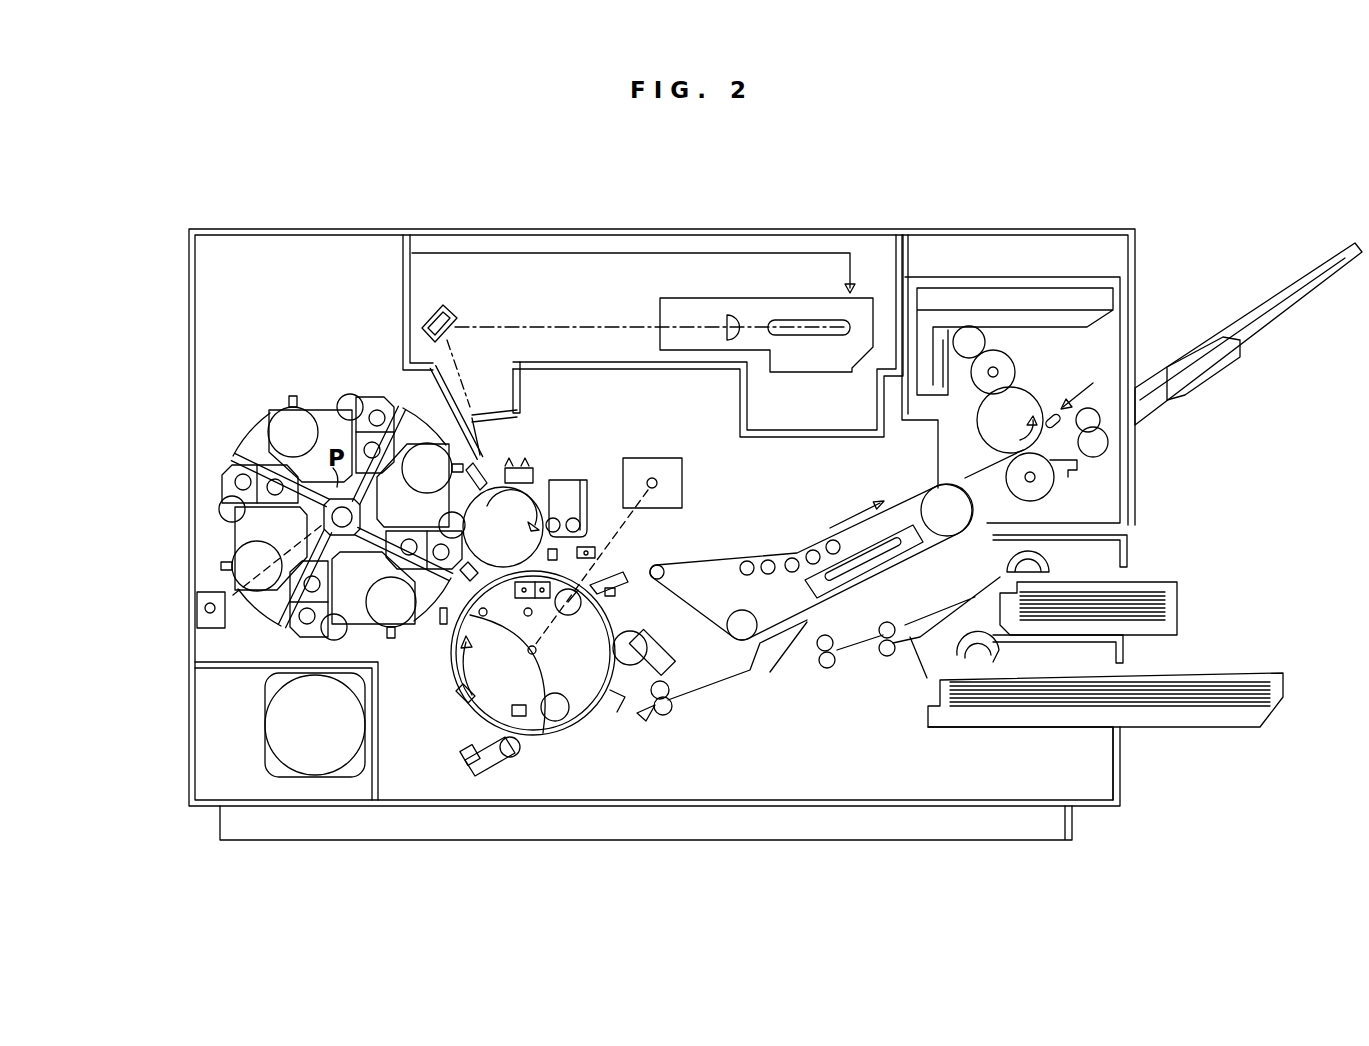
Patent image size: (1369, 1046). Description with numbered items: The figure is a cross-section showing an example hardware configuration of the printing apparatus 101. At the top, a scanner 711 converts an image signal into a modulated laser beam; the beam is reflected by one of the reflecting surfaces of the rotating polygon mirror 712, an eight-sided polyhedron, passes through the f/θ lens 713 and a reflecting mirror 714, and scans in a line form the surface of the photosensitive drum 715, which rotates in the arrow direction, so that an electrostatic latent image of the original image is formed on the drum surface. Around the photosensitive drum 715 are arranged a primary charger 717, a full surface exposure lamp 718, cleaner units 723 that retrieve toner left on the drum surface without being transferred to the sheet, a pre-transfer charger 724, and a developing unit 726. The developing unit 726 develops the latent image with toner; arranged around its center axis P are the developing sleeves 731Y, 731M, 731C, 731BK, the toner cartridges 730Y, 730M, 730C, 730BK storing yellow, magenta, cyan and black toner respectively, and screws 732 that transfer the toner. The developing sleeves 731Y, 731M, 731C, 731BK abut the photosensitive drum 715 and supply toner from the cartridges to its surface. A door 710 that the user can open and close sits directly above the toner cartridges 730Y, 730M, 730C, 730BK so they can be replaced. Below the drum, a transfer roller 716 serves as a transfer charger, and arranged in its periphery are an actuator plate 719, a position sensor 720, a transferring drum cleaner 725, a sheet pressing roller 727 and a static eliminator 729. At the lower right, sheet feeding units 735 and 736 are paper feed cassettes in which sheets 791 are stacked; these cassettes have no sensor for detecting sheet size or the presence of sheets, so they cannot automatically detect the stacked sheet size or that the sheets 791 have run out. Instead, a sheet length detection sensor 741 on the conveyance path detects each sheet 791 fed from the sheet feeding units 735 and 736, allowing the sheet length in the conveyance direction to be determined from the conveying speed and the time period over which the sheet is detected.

The printing apparatus 101 is at (1118, 181).
The door 710 is at (297, 229).
The scanner 711 is at (750, 298).
The polygon mirror 712 is at (805, 319).
The f/θ lens 713 is at (730, 318).
The reflecting mirror 714 is at (454, 316).
The photosensitive drum 715 is at (585, 576).
The transfer roller 716 is at (540, 727).
The primary charger 717 is at (575, 480).
The full surface exposure lamp 718 is at (535, 462).
The actuator plate 719 is at (460, 700).
The position sensor 720 is at (468, 744).
The cleaner units 723 is at (566, 522).
The pre-transfer charger 724 is at (443, 626).
The transferring drum cleaner 725 is at (600, 708).
The developing unit 726 is at (252, 438).
The sheet pressing roller 727 is at (653, 655).
The static eliminator 729 is at (583, 620).
The toner cartridge 730BK is at (280, 422).
The developing sleeve 731BK is at (350, 395).
The toner cartridge 730C is at (242, 558).
The developing sleeve 731C is at (225, 505).
The toner cartridge 730M is at (386, 626).
The developing sleeve 731M is at (320, 636).
The toner cartridge 730Y is at (495, 425).
The developing sleeve 731Y is at (490, 462).
The screws 732 is at (377, 410).
The sheet feeding unit 735 is at (1153, 582).
The sheet feeding unit 736 is at (1252, 673).
The sheet length detection sensor 741 is at (650, 722).
The sheets 791 is at (1180, 693).